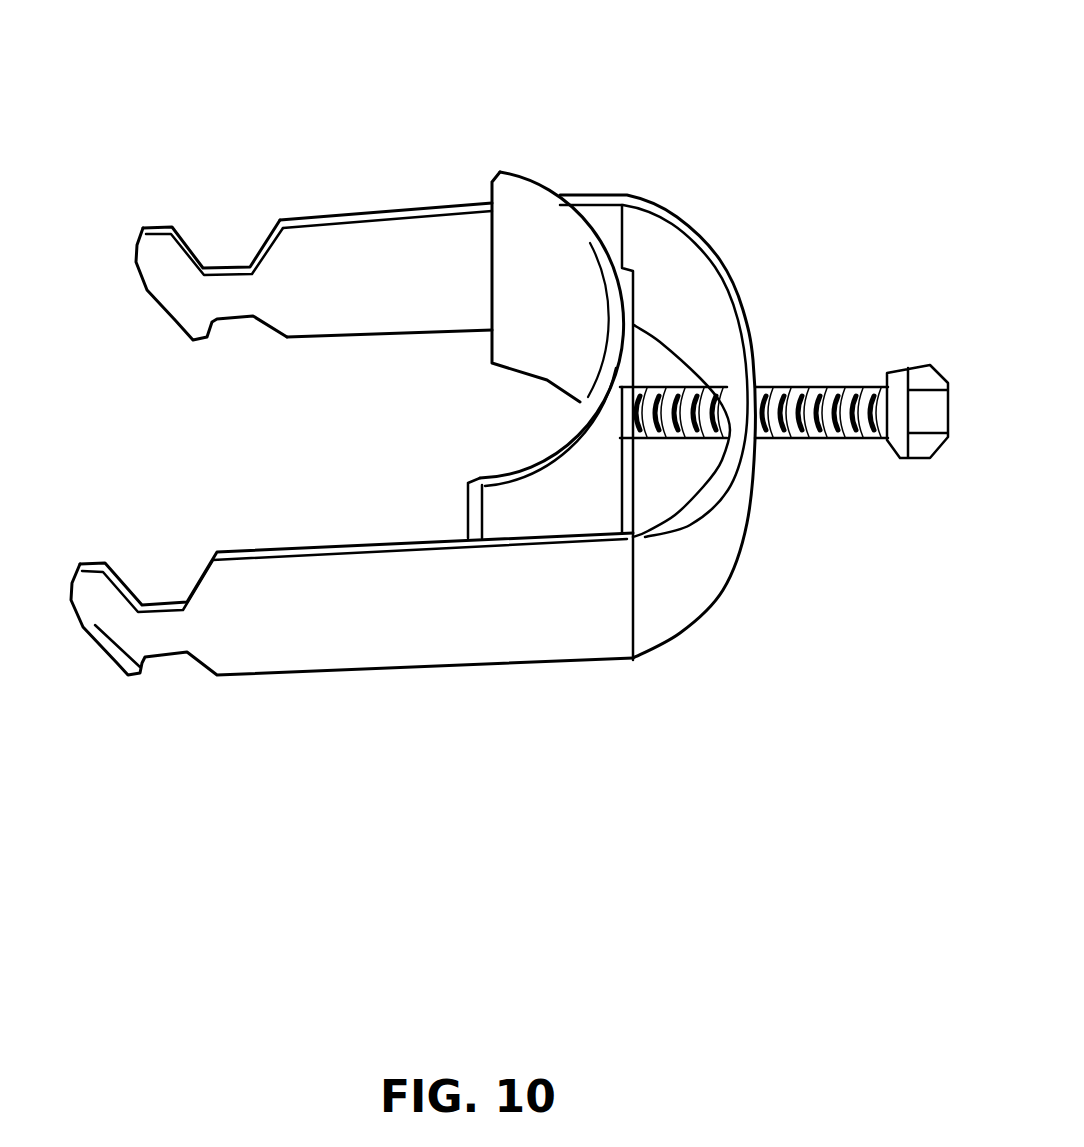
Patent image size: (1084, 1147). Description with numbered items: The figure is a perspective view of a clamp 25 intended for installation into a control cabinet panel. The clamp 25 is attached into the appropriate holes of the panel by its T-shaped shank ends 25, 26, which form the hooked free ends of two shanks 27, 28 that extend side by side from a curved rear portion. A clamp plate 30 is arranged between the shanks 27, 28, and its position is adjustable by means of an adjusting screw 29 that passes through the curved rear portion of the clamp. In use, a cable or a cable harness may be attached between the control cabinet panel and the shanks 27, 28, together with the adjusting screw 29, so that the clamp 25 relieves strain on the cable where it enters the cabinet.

The clamp 25 is at (509, 435).
The T-shaped shank end 26 is at (177, 282).
The shank 27 is at (380, 260).
The shank 28 is at (443, 605).
The adjusting screw 29 is at (828, 398).
The clamp plate 30 is at (583, 502).